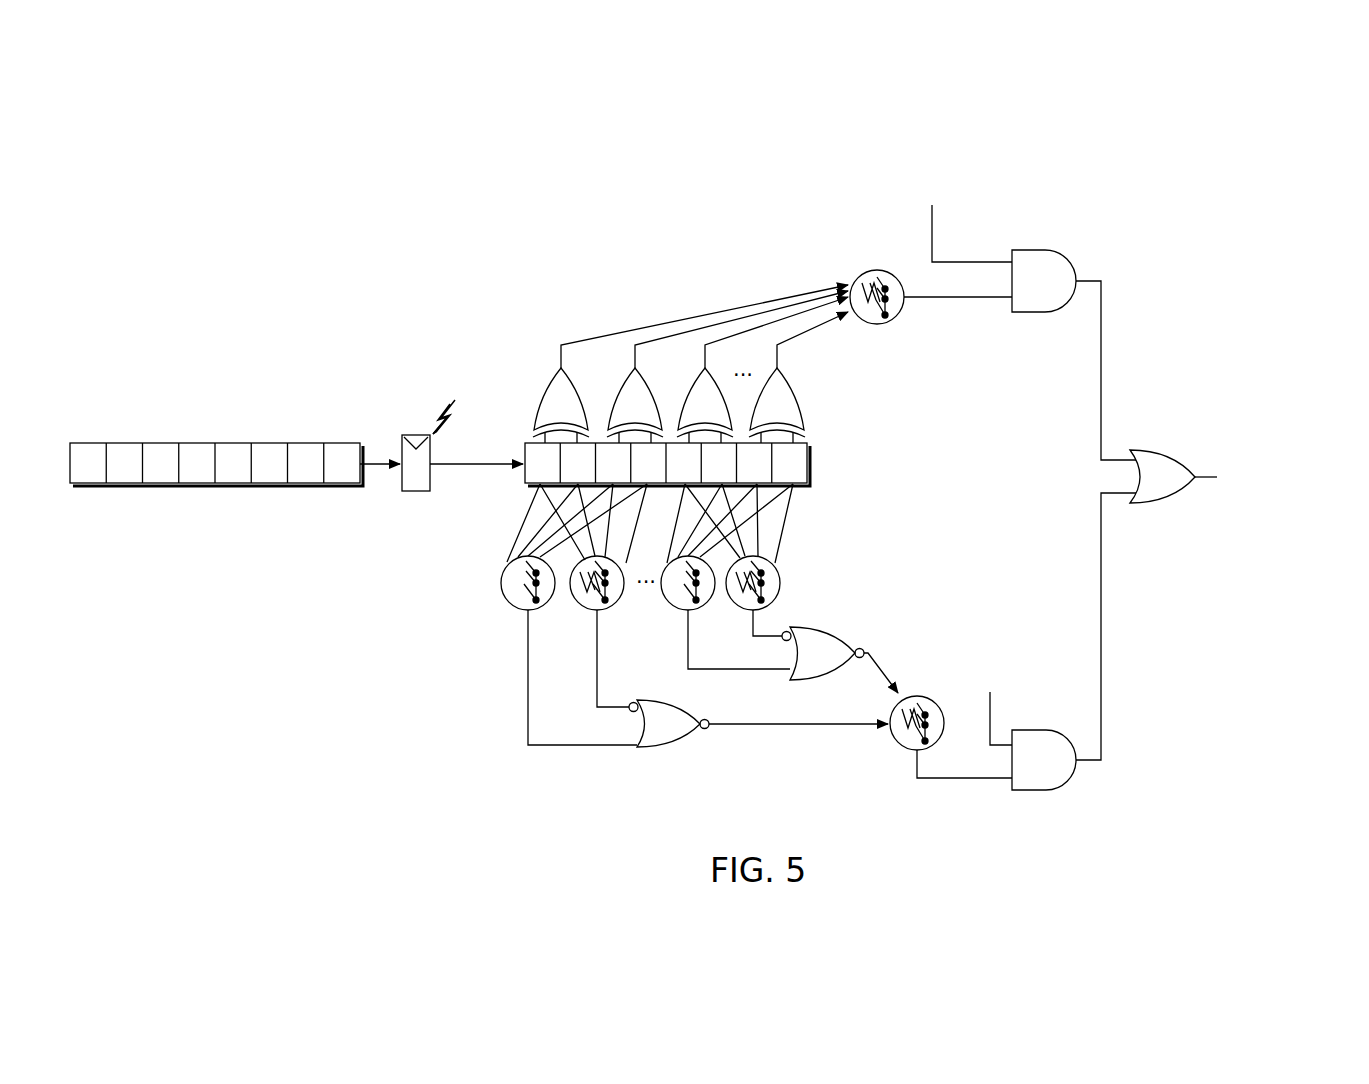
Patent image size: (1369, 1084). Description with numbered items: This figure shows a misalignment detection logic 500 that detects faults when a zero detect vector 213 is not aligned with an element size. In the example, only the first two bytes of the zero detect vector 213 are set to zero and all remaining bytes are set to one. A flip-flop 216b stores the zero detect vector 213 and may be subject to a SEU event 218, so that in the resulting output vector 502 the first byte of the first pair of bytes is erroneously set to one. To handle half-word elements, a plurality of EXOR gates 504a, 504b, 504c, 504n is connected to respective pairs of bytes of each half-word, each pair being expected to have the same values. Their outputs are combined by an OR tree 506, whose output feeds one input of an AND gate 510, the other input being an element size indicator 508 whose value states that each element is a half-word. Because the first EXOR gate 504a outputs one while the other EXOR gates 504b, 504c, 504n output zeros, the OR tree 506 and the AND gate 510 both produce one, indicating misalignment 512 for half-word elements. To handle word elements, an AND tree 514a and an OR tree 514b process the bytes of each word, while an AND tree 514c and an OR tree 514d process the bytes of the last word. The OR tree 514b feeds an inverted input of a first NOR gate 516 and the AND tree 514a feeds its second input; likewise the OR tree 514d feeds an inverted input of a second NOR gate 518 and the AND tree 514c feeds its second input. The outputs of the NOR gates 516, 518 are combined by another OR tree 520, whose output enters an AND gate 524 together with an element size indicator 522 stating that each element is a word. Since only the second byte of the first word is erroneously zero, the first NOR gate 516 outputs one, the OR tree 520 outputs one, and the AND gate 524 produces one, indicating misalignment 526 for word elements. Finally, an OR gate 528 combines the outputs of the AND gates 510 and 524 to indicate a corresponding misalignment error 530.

The misalignment detection logic 500 is at (450, 151).
The zero detect vector 213 is at (203, 443).
The flip-flop 216b is at (402, 446).
The SEU event 218 is at (433, 404).
The output vector 502 is at (812, 467).
The first EXOR gate 504a is at (548, 390).
The EXOR gate 504b is at (618, 395).
The EXOR gate 504c is at (688, 395).
The EXOR gate 504n is at (826, 372).
The OR tree 506 is at (862, 276).
The element size indicator 508 is at (1005, 190).
The AND gate 510 is at (1055, 250).
The misalignment 512 is at (1165, 336).
The AND tree 514a is at (501, 584).
The OR tree 514b is at (590, 610).
The AND tree 514c is at (670, 606).
The OR tree 514d is at (781, 583).
The first NOR gate 516 is at (677, 745).
The second NOR gate 518 is at (832, 636).
The OR tree 520 is at (893, 742).
The element size indicator 522 is at (989, 666).
The AND gate 524 is at (1050, 790).
The misalignment 526 is at (1161, 595).
The OR gate 528 is at (1157, 452).
The misalignment error 530 is at (1258, 465).